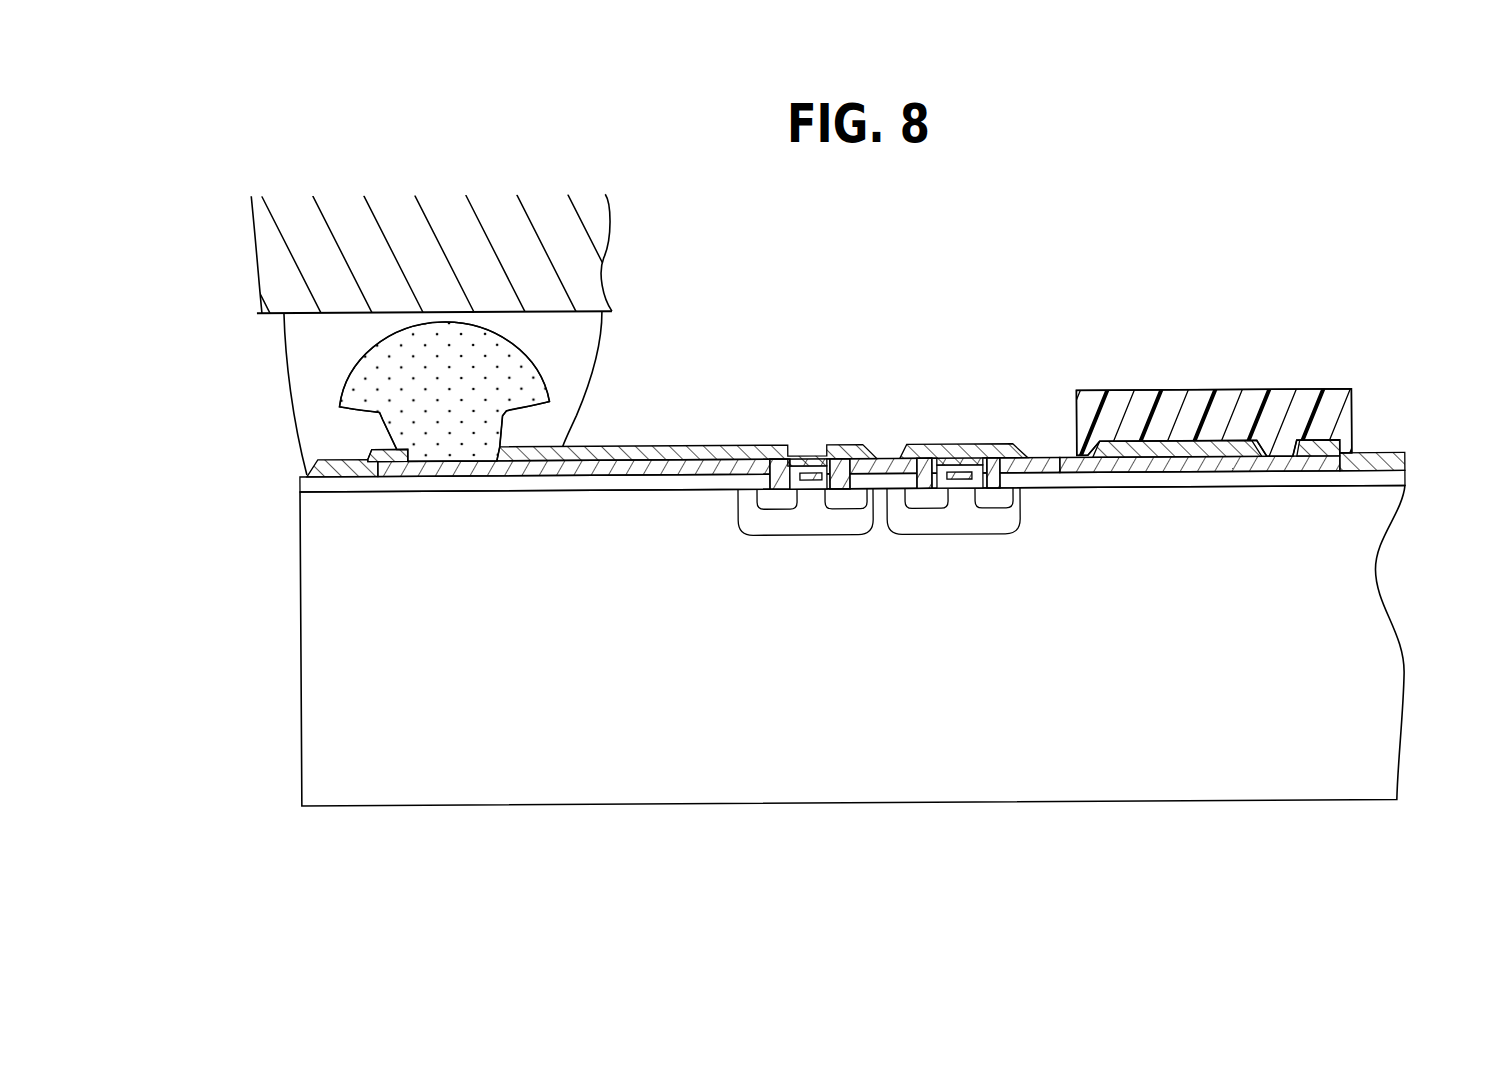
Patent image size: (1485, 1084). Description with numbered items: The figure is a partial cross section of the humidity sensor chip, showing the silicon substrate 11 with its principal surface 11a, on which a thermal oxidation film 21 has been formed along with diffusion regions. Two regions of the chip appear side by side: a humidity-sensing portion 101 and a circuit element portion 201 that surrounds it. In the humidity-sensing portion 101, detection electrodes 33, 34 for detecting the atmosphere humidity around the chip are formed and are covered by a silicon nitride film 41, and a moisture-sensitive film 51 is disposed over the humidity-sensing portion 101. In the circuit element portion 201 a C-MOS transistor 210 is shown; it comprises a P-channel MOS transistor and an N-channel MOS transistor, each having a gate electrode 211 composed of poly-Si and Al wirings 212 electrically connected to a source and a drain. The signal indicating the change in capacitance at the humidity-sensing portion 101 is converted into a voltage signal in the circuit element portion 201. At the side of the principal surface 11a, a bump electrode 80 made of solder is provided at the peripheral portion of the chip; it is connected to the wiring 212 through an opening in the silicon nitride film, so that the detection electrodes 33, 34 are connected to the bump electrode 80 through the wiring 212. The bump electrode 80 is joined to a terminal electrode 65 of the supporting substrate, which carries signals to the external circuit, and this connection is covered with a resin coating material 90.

The silicon substrate 11 is at (1393, 694).
The principal surface 11a is at (373, 448).
The thermal oxidation film 21 is at (1393, 484).
The detection electrode 33 is at (1222, 461).
The detection electrode 34 is at (1338, 447).
The silicon nitride film 41 is at (1398, 459).
The moisture-sensitive film 51 is at (1233, 440).
The terminal electrode 65 is at (597, 231).
The bump electrode 80 is at (370, 348).
The coating material 90 is at (285, 382).
The humidity-sensing portion 101 is at (1350, 311).
The circuit element portion 201 is at (1040, 309).
The C-MOS transistor 210 is at (886, 462).
The gate electrode 211 is at (810, 465).
The Al wiring 212 is at (775, 465).